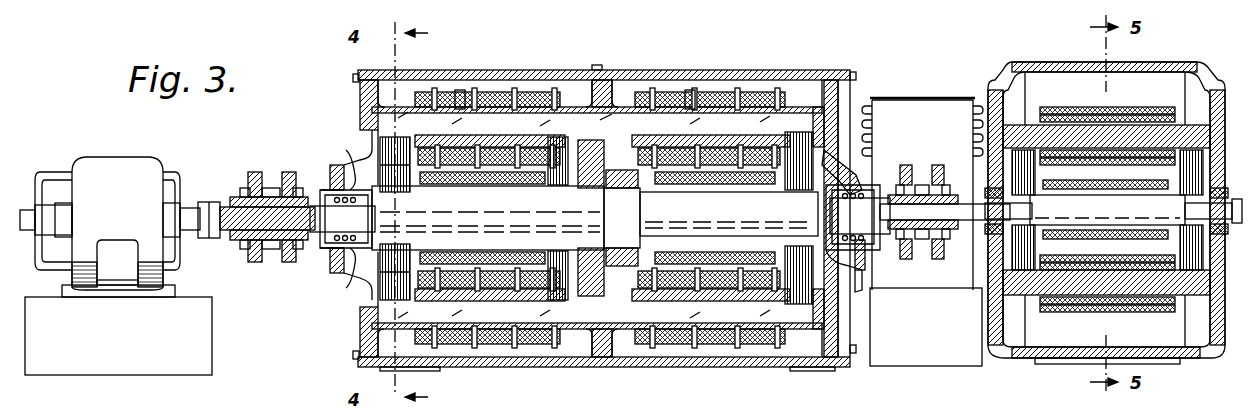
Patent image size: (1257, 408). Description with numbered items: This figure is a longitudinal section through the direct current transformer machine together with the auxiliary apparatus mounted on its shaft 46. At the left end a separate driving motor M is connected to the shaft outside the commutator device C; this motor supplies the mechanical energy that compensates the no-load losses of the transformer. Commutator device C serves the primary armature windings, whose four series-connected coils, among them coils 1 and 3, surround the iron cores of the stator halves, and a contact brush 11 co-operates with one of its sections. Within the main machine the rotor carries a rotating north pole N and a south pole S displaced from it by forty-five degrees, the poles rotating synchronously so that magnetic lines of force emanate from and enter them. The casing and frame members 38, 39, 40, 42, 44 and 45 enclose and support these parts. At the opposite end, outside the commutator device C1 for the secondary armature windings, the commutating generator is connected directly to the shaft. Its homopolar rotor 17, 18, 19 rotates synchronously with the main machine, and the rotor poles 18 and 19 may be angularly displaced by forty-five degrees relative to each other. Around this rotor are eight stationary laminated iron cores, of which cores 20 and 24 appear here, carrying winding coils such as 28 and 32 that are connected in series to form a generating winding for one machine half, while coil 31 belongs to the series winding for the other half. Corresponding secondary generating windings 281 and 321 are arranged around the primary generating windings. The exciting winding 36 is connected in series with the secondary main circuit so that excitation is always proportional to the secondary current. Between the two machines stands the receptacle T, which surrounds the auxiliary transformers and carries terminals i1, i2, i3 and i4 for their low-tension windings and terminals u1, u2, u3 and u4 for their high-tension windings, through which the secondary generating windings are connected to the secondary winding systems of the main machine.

The driving motor M is at (105, 168).
The commutator device C is at (267, 236).
The commutator device C1 is at (945, 224).
The south pole S is at (375, 268).
The north pole N is at (812, 278).
The receptacle T is at (920, 98).
The primary armature winding coil 1 is at (425, 92).
The contact brush 11 is at (512, 92).
The primary armature winding coil 3 is at (430, 348).
The winding coil 31 is at (515, 348).
The casing end wall 38 is at (362, 117).
The casing end wall 39 is at (832, 105).
The inner casing 40 is at (404, 118).
The inner casing lower 42 is at (582, 318).
The casing partition 44 is at (620, 105).
The fastening bolts 45 is at (357, 77).
The shaft 46 is at (836, 180).
The terminal u1 is at (883, 111).
The terminal u2 is at (883, 128).
The terminal u3 is at (883, 144).
The terminal u4 is at (877, 161).
The terminal i1 is at (964, 111).
The terminal i2 is at (964, 128).
The terminal i3 is at (964, 144).
The terminal i4 is at (969, 161).
The rotor 17 is at (1113, 211).
The rotor pole 18 is at (1030, 252).
The rotor pole 19 is at (1182, 245).
The iron core 20 is at (1180, 125).
The iron core 24 is at (1182, 290).
The winding coil 28 is at (1052, 108).
The secondary generating winding 281 is at (1090, 115).
The winding coil 32 is at (1063, 305).
The secondary generating winding 321 is at (1095, 305).
The exciting winding 36 is at (1115, 178).